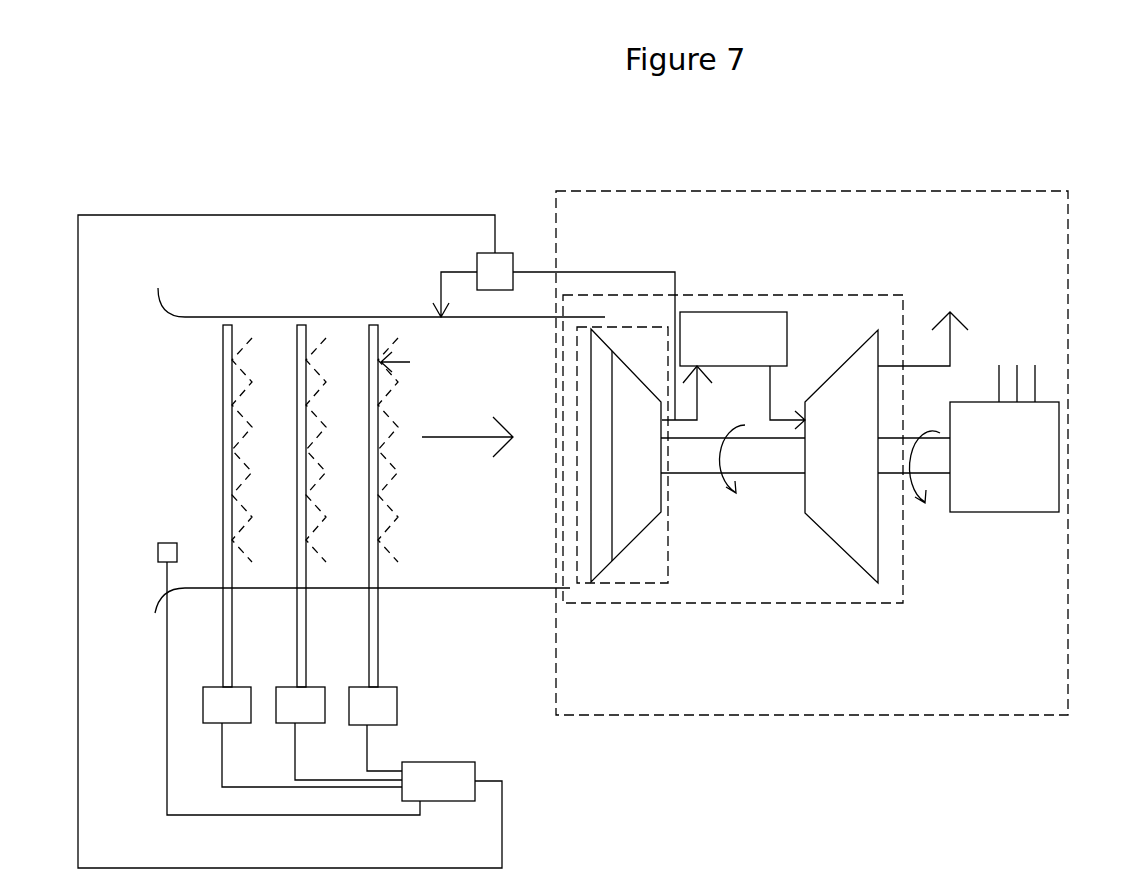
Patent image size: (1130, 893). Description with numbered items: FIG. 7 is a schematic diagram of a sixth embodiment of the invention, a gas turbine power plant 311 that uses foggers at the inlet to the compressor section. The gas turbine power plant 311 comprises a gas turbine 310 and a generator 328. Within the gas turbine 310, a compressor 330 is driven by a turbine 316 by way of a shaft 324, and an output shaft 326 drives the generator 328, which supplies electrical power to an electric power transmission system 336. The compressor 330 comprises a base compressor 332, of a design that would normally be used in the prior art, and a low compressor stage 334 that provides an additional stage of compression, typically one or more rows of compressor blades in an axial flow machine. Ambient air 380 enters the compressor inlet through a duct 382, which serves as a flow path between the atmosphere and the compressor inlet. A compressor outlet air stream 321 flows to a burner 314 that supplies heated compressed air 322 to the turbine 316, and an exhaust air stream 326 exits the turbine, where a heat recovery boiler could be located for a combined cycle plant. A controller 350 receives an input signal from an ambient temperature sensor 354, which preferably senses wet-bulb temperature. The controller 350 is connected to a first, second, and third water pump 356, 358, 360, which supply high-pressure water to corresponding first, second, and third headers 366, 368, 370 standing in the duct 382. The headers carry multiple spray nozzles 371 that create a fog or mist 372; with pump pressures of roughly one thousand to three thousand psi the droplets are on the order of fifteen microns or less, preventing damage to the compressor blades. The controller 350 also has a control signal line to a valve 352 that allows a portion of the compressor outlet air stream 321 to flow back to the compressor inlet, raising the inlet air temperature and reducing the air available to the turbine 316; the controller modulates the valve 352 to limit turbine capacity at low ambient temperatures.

The gas turbine 310 is at (805, 295).
The gas turbine power plant 311 is at (870, 715).
The burner 314 is at (742, 312).
The turbine 316 is at (840, 502).
The compressor outlet air stream 321 is at (665, 420).
The heated compressed air 322 is at (780, 420).
The shaft 324 is at (772, 460).
The output shaft / exhaust air stream 326 is at (952, 348).
The generator 328 is at (1045, 477).
The compressor 330 is at (651, 515).
The base compressor 332 is at (630, 518).
The low compressor stage 334 is at (600, 565).
The electric power transmission system 336 is at (1035, 392).
The controller 350 is at (290, 541).
The valve 352 is at (480, 268).
The ambient temperature sensor 354 is at (277, 661).
The first water pump 356 is at (218, 708).
The second water pump 358 is at (285, 705).
The third water pump 360 is at (385, 703).
The first header 366 is at (224, 350).
The second header 368 is at (300, 333).
The third header 370 is at (377, 333).
The spray nozzles 371 is at (410, 362).
The fog or mist 372 is at (378, 450).
The ambient air 380 is at (366, 471).
The duct 382 is at (420, 590).